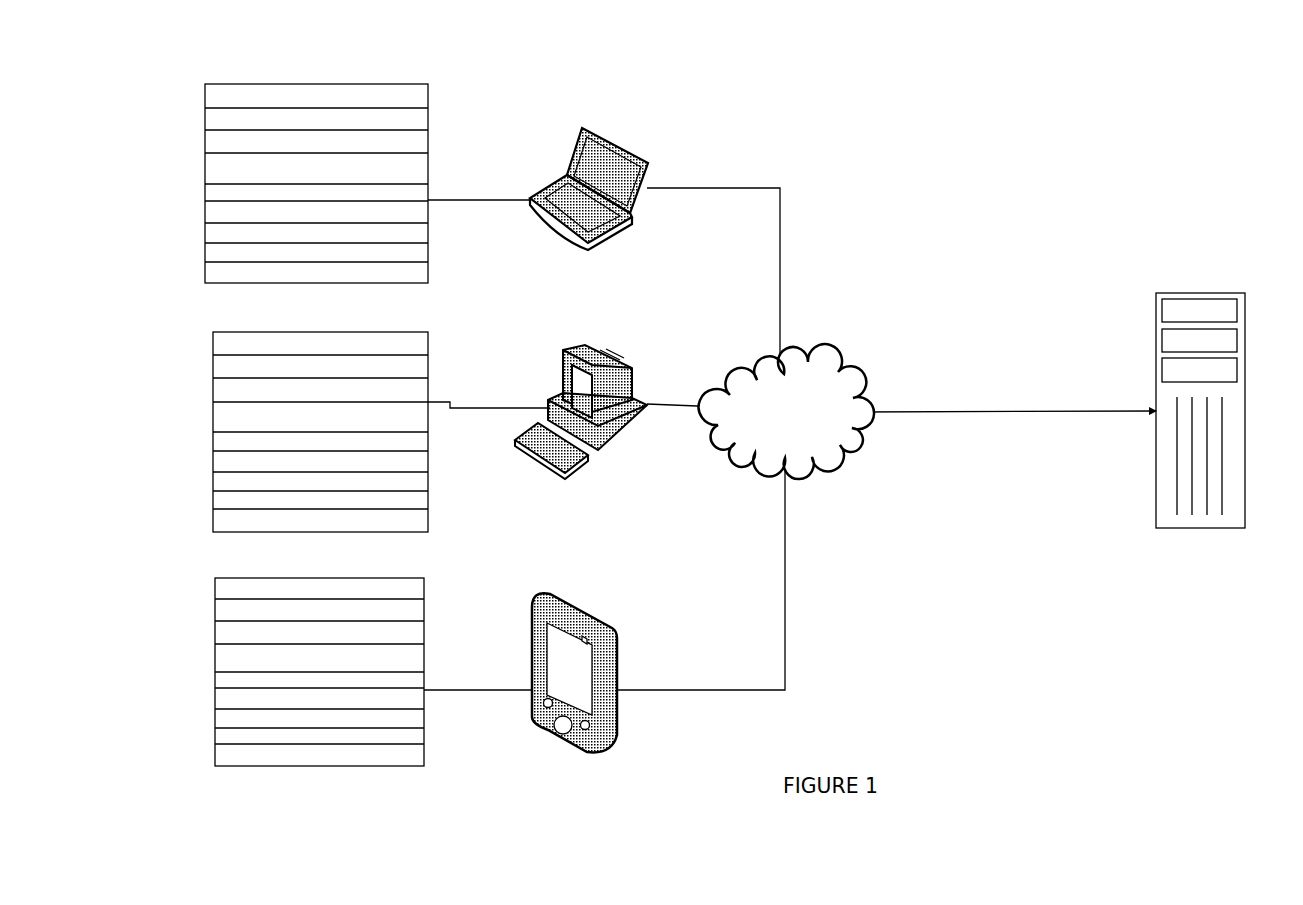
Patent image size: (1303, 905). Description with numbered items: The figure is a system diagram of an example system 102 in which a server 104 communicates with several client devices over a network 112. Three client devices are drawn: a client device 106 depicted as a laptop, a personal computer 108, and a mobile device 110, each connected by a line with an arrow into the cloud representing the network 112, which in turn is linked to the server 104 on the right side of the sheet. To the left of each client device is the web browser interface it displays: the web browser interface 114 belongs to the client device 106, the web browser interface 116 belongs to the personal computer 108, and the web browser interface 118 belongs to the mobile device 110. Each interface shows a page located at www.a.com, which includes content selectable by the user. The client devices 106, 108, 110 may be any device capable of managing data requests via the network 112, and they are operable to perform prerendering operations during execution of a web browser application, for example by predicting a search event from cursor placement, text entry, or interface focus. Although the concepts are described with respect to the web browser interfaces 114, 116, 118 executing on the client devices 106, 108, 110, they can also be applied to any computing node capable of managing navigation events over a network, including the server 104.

The system 102 is at (1113, 95).
The server 104 is at (1215, 292).
The client device 106 is at (615, 142).
The personal computer 108 is at (618, 358).
The mobile device 110 is at (595, 610).
The network 112 is at (775, 428).
The web browser interface 114 is at (397, 84).
The web browser interface 116 is at (428, 332).
The web browser interface 118 is at (424, 578).